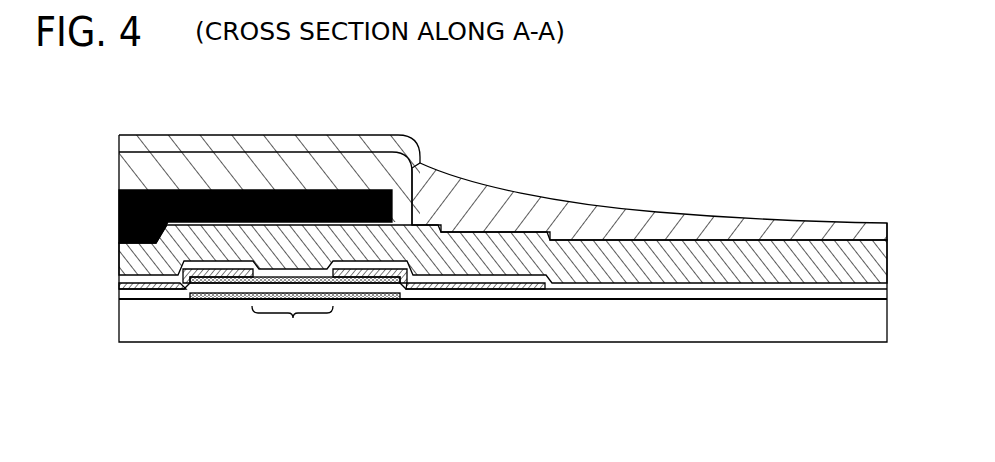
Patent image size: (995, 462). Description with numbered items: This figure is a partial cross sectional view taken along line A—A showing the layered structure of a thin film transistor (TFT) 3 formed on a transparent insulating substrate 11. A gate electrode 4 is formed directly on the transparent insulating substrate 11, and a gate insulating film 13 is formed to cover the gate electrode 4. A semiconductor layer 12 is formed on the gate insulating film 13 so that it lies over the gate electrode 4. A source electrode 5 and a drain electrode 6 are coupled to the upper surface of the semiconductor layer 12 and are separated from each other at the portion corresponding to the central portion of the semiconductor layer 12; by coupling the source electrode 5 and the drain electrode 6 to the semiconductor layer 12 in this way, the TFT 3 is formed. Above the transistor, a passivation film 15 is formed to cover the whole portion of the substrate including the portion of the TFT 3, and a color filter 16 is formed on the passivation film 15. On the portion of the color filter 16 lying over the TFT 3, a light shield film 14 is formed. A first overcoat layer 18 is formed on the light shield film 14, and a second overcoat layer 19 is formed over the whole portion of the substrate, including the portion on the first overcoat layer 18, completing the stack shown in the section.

The thin film transistor 3 is at (293, 318).
The gate electrode 4 is at (362, 300).
The source electrode 5 is at (203, 278).
The drain electrode 6 is at (383, 281).
The transparent insulating substrate 11 is at (664, 320).
The semiconductor layer 12 is at (228, 283).
The gate insulating film 13 is at (525, 296).
The light shield film 14 is at (121, 218).
The passivation film 15 is at (746, 288).
The color filter 16 is at (662, 253).
The first overcoat layer 18 is at (128, 176).
The second overcoat layer 19 is at (512, 202).